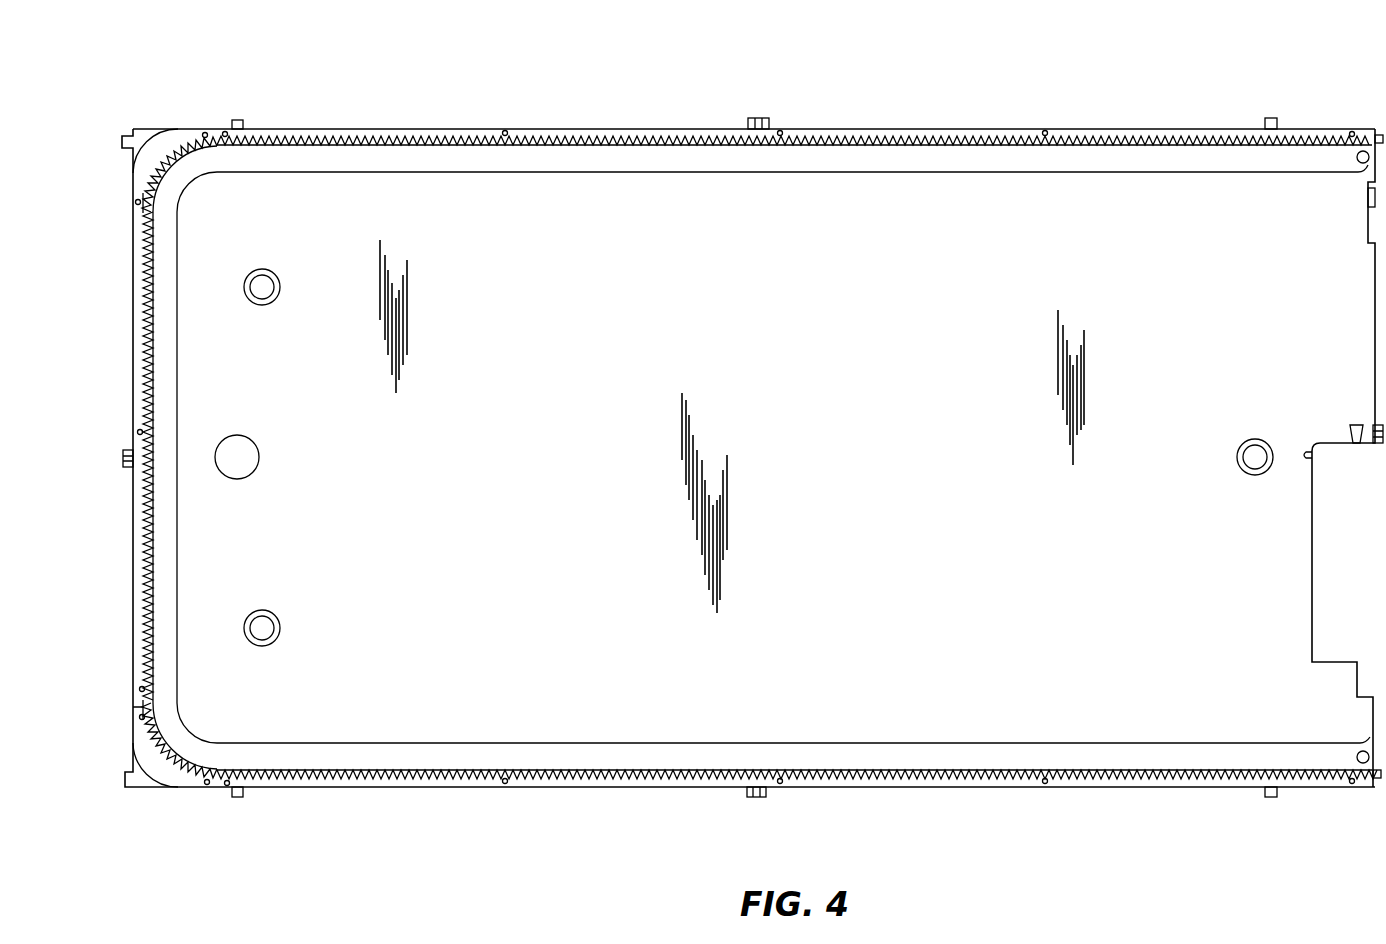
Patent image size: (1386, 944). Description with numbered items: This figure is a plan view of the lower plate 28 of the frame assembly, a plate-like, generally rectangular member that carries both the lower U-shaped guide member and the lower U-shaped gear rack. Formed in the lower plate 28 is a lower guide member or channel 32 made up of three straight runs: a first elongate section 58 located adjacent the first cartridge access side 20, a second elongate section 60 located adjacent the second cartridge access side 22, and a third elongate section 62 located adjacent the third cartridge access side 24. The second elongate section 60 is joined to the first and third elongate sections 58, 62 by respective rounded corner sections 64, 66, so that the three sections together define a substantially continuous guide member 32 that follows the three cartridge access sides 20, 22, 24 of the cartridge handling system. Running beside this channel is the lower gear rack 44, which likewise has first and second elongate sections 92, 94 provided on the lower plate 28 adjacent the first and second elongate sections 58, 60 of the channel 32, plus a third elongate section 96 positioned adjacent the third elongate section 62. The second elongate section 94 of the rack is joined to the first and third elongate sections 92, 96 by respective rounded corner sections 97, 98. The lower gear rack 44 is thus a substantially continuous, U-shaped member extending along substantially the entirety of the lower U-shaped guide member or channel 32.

The lower plate 28 is at (320, 62).
The third cartridge access side 24 is at (1050, 122).
The first cartridge access side 20 is at (356, 792).
The second cartridge access side 22 is at (130, 567).
The rounded corner section 98 is at (158, 152).
The rounded corner section 97 is at (157, 790).
The rounded corner section 66 is at (190, 182).
The rounded corner section 64 is at (190, 740).
The second elongate section 60 is at (180, 325).
The third elongate section 62 is at (1120, 176).
The third elongate section 96 is at (897, 150).
The first elongate section 92 is at (1080, 768).
The second elongate section 94 is at (155, 528).
The lower guide member or channel 32 is at (835, 741).
The lower gear rack 44 is at (619, 764).
The first elongate section 58 is at (1215, 740).